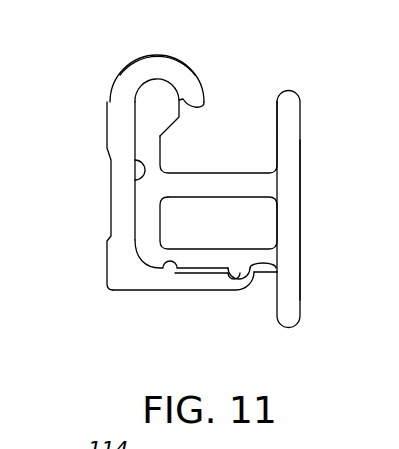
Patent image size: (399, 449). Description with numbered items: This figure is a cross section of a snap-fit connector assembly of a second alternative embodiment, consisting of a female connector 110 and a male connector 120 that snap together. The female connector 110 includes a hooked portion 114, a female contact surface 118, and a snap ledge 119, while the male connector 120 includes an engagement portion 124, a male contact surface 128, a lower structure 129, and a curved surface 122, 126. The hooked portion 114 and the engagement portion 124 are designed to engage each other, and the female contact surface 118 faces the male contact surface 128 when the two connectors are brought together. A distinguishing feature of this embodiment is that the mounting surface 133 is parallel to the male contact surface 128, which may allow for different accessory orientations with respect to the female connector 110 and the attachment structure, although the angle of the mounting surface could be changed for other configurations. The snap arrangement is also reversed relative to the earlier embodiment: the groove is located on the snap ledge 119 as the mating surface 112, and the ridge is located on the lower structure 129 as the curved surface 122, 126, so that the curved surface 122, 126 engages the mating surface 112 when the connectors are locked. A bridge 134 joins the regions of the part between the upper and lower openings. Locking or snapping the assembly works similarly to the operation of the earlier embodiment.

The female connector 110 is at (123, 71).
The hooked portion 114 is at (150, 55).
The engagement portion 124 is at (167, 90).
The female contact surface 118 is at (135, 142).
The male contact surface 128 is at (135, 180).
The bridge 134 is at (212, 172).
The male connector 120 is at (302, 126).
The mounting surface 133 is at (302, 238).
The curved surface 122 is at (244, 277).
The snap ledge 119 is at (163, 272).
The lower structure 129 is at (193, 268).
The mating surface 112 is at (242, 292).
The curved surface 126 is at (267, 276).